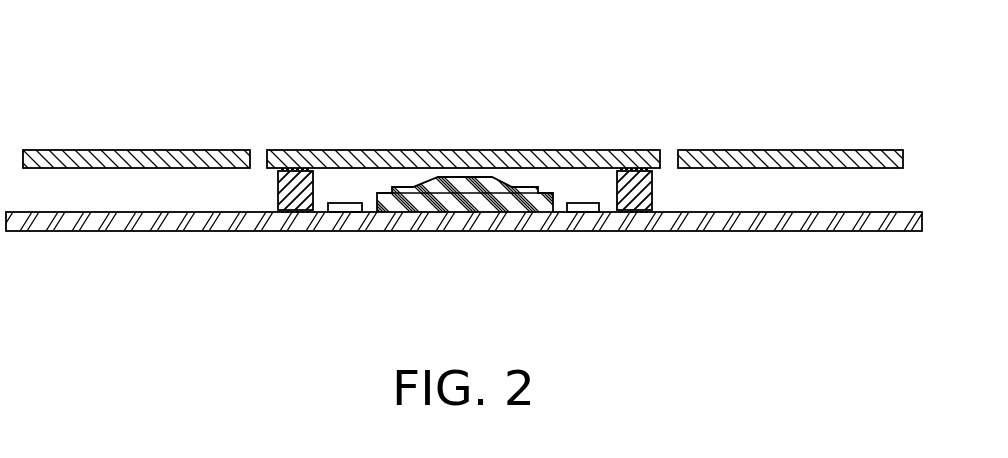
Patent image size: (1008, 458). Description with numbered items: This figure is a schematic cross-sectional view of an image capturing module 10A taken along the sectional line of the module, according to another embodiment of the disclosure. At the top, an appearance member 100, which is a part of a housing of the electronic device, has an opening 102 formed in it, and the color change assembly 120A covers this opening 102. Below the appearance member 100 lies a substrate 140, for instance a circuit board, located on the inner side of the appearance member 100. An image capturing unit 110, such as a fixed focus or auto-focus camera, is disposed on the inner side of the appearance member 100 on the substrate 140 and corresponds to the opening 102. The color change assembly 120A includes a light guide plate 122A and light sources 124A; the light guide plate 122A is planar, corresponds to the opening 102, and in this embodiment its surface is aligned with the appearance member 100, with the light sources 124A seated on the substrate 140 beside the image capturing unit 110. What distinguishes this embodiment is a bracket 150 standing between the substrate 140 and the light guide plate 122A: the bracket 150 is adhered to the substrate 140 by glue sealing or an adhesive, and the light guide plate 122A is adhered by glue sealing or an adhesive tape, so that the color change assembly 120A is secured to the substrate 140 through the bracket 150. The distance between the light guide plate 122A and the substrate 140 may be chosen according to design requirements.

The image capturing module 10A is at (115, 90).
The appearance member 100 is at (712, 148).
The opening 102 is at (252, 156).
The image capturing unit 110 is at (457, 185).
The color change assembly 120A is at (461, 187).
The light guide plate 122A is at (471, 150).
The light source 124A is at (347, 207).
The substrate 140 is at (113, 222).
The bracket 150 is at (283, 192).